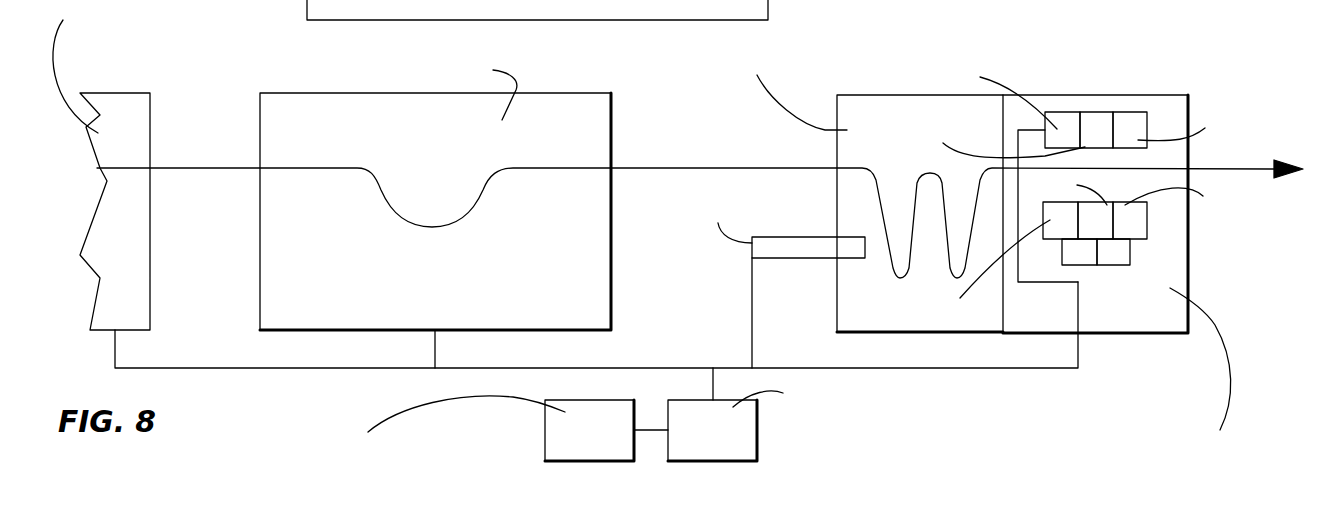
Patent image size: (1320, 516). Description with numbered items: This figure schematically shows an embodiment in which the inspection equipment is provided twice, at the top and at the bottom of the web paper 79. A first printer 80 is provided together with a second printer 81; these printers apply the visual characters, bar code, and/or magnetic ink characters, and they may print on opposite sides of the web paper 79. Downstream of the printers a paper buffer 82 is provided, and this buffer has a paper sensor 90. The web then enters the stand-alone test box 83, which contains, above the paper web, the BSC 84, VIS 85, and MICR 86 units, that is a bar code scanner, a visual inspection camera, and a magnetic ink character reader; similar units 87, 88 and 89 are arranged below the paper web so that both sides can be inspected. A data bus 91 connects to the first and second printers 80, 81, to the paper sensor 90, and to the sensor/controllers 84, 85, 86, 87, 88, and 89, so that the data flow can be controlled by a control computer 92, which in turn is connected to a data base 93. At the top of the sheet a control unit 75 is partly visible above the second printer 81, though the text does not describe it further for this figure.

The control unit 75 is at (537, 11).
The web paper 79 is at (197, 167).
The first printer 80 is at (120, 125).
The second printer 81 is at (578, 139).
The paper buffer 82 is at (859, 122).
The stand-alone test box 83 is at (1116, 95).
The BSC unit 84 is at (1053, 128).
The VIS unit 85 is at (1097, 130).
The MICR unit 86 is at (1133, 130).
The BSC unit (lower) 87 is at (1060, 222).
The VIS unit (lower) 88 is at (1093, 228).
The MICR unit (lower) 89 is at (1133, 213).
The paper sensor 90 is at (775, 258).
The data bus 91 is at (330, 368).
The control computer 92 is at (713, 425).
The data base 93 is at (567, 427).